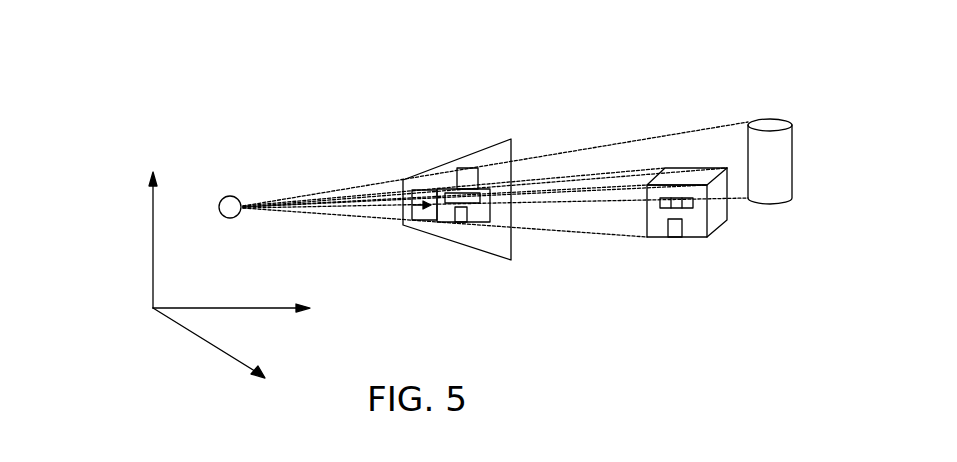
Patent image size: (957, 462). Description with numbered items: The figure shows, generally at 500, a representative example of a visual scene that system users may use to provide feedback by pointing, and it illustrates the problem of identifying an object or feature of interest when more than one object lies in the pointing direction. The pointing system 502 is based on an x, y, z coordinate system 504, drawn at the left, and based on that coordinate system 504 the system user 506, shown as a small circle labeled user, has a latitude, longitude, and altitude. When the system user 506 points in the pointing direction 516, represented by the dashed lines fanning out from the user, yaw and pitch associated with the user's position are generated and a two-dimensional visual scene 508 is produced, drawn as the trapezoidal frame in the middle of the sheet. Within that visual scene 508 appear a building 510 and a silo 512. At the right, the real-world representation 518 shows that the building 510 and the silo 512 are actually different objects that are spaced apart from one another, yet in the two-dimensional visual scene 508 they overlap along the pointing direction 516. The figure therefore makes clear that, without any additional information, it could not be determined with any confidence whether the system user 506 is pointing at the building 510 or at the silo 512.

The visual scene example 500 is at (456, 75).
The pointing system 502 is at (212, 62).
The x, y, z coordinate system 504 is at (153, 243).
The system user 506 is at (232, 196).
The 2-D visual scene 508 is at (443, 164).
The building 510 is at (432, 217).
The silo 512 is at (465, 168).
The pointing direction 516 is at (350, 210).
The real-world representation 518 is at (692, 289).